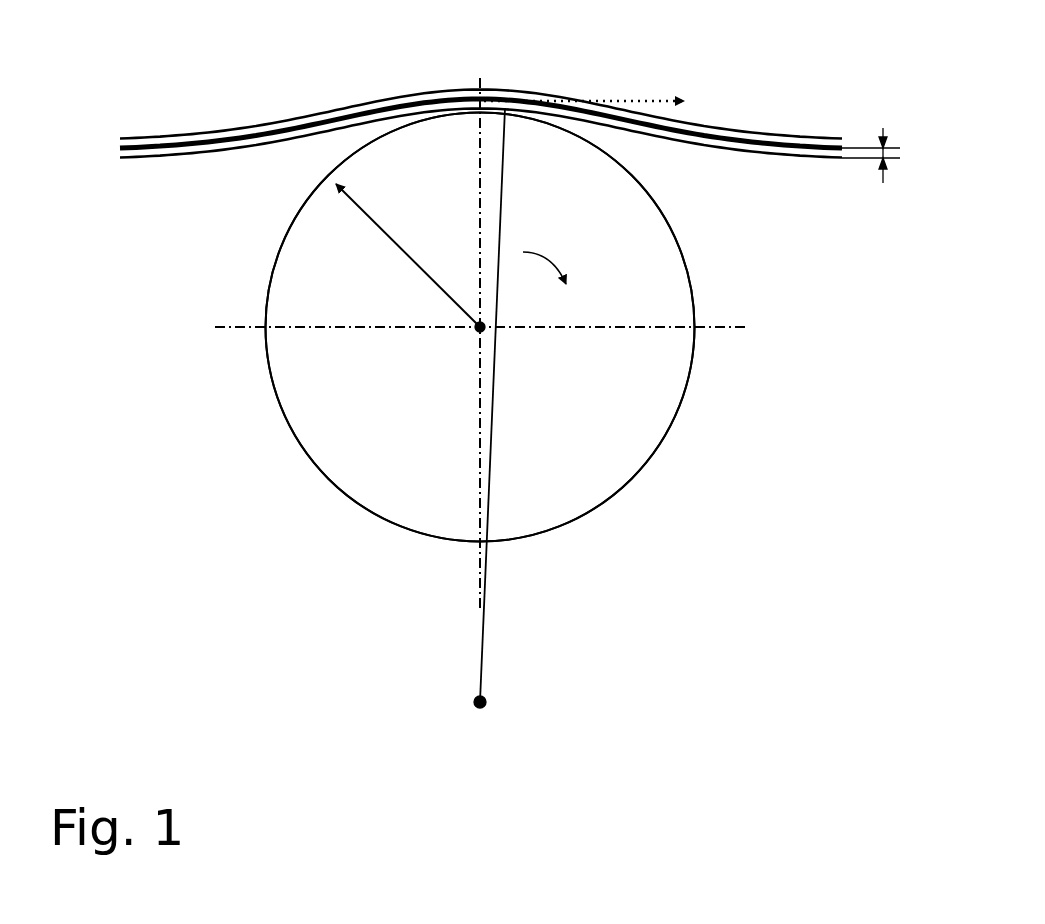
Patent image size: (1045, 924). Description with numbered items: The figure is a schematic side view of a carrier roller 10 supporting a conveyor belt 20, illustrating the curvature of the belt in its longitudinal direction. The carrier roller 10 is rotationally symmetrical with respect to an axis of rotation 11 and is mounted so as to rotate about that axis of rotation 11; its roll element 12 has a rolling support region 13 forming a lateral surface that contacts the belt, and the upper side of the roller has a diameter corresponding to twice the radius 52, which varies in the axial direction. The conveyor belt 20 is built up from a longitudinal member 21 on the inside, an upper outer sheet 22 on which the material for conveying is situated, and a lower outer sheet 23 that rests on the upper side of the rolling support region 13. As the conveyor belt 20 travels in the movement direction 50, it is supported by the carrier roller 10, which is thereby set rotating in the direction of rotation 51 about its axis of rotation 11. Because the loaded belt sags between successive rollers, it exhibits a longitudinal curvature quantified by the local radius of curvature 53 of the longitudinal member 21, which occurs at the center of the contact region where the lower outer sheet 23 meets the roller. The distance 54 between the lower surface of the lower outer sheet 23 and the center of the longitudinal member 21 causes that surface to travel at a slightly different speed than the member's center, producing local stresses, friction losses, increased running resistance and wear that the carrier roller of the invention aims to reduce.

The carrier roller 10 is at (652, 478).
The axis of rotation 11 is at (480, 327).
The roll element 12 is at (676, 355).
The rolling support region 13 is at (683, 258).
The conveyor belt 20 is at (440, 76).
The longitudinal member 21 is at (118, 155).
The upper outer sheet 22 is at (277, 120).
The lower outer sheet 23 is at (282, 145).
The movement direction 50 is at (584, 80).
The direction of rotation 51 is at (564, 263).
The radius 52 is at (358, 213).
The radius of curvature 53 is at (488, 627).
The distance 54 is at (884, 141).